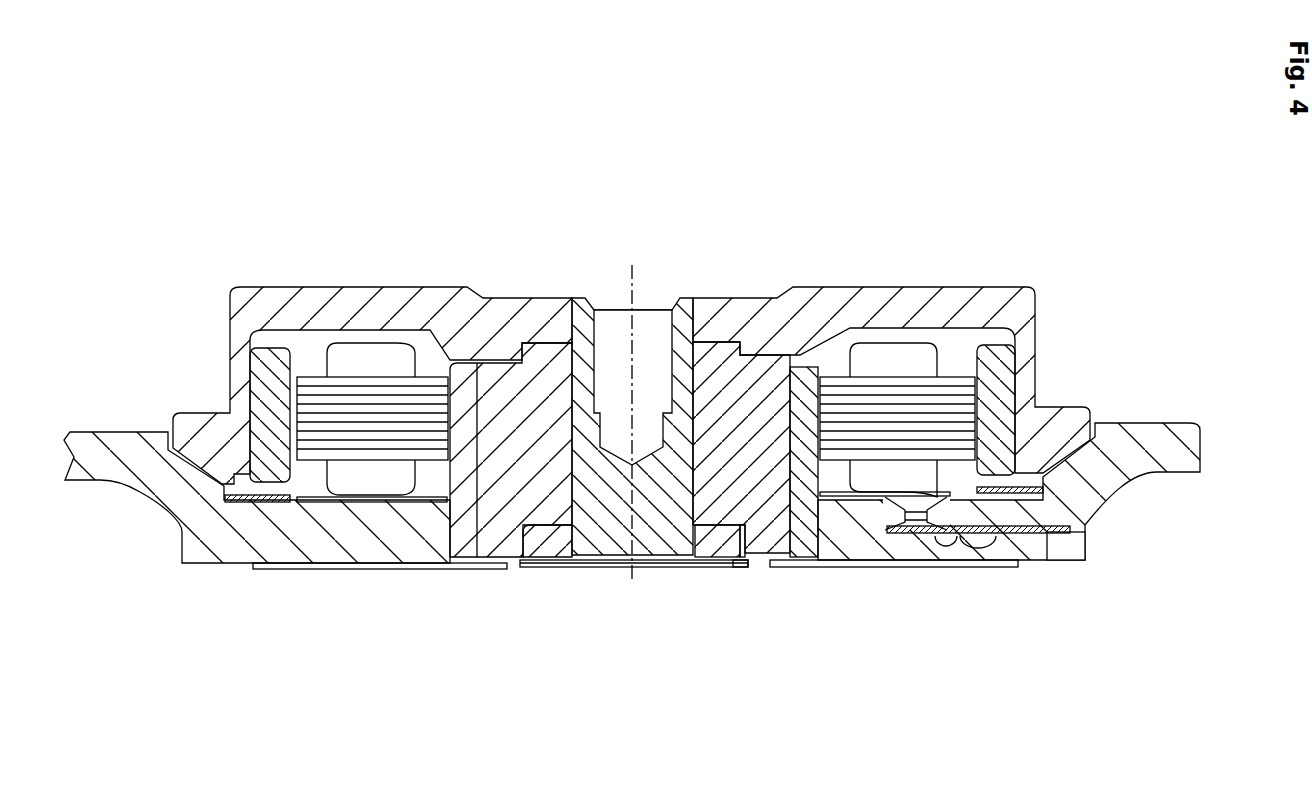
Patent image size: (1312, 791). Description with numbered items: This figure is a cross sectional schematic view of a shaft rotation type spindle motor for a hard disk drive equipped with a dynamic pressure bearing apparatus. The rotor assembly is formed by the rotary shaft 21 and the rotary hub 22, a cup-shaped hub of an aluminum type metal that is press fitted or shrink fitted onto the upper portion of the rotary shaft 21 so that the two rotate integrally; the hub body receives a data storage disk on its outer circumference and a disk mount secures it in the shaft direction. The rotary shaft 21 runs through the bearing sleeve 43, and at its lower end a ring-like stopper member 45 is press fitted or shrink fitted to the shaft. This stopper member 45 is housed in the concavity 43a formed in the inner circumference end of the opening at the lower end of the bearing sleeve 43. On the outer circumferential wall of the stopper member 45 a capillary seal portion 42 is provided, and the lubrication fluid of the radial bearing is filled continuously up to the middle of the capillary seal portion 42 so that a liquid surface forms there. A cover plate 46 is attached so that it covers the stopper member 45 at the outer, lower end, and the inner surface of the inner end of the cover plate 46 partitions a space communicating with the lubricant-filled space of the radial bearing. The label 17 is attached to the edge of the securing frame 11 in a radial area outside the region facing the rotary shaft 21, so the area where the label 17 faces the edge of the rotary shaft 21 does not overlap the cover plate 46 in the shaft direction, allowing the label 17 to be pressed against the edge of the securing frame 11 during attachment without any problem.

The securing frame 11 is at (350, 567).
The label 17 is at (433, 568).
The rotary shaft 21 is at (583, 297).
The rotary hub 22 is at (390, 285).
The capillary seal portion 42 is at (738, 567).
The bearing sleeve 43 is at (758, 441).
The concavity 43a is at (713, 567).
The stopper member 45 is at (547, 568).
The cover plate 46 is at (597, 567).